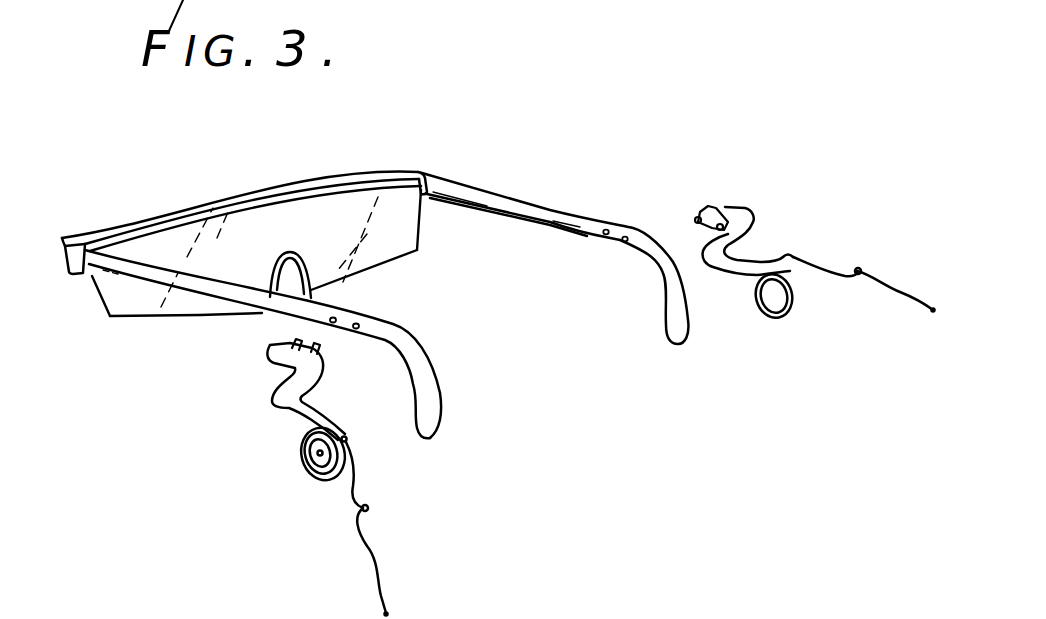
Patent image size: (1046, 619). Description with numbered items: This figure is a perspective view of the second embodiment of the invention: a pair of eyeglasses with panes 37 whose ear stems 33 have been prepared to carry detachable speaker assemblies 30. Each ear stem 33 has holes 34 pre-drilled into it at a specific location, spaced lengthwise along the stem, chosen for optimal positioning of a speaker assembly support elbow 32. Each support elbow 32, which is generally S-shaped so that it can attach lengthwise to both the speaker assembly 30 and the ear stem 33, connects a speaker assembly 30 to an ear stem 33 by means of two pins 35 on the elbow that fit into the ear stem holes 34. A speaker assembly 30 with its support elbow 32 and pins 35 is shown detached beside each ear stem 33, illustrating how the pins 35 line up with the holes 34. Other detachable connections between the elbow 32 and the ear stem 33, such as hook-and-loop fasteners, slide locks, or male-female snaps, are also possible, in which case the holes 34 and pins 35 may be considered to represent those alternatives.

The speaker assembly 30 is at (304, 470).
The support elbow 32 is at (288, 400).
The ear stem 33 is at (490, 194).
The holes 34 is at (359, 325).
The pins 35 is at (290, 347).
The panes 37 is at (310, 224).